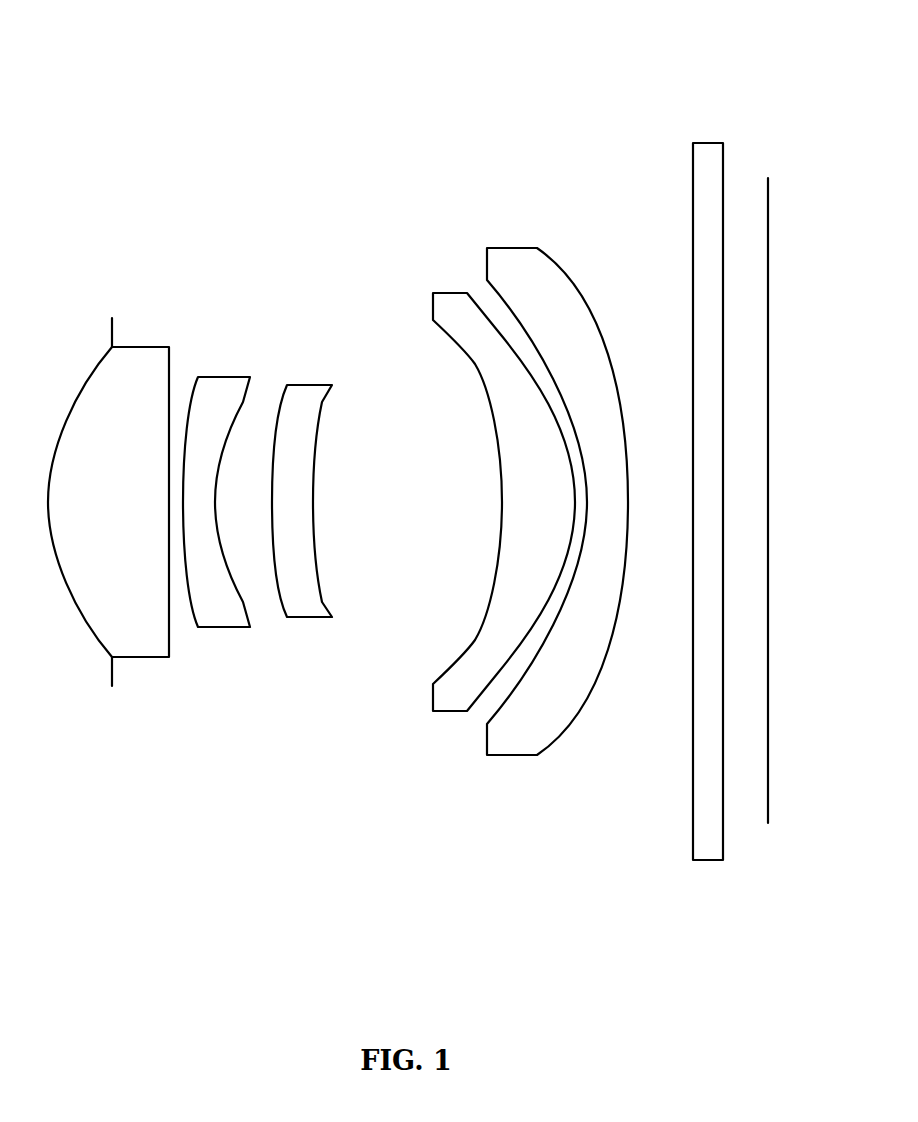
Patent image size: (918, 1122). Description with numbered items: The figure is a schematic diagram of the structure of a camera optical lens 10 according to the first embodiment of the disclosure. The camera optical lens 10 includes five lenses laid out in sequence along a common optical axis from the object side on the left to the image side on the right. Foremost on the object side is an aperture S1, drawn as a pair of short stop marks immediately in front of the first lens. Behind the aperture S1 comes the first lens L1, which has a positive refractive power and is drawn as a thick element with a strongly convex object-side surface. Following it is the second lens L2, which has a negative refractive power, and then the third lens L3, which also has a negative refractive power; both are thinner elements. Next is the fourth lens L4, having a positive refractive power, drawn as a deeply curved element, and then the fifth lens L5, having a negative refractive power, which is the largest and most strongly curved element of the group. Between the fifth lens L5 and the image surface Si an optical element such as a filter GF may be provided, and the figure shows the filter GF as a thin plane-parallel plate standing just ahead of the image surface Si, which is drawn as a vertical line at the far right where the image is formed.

The camera optical lens 10 is at (395, 40).
The aperture S1 is at (112, 487).
The first lens L1 is at (108, 486).
The second lens L2 is at (216, 486).
The third lens L3 is at (302, 485).
The fourth lens L4 is at (504, 487).
The fifth lens L5 is at (557, 484).
The filter GF is at (708, 487).
The image surface Si is at (765, 482).